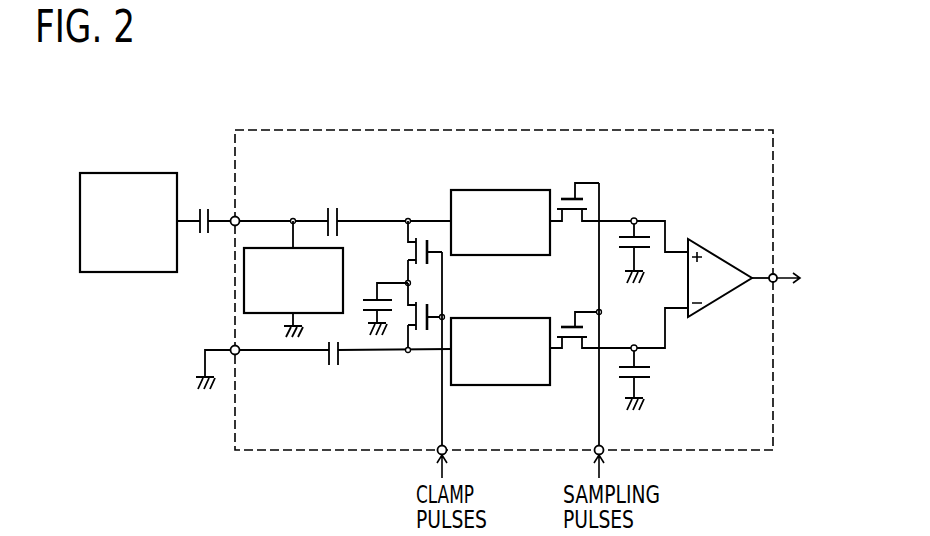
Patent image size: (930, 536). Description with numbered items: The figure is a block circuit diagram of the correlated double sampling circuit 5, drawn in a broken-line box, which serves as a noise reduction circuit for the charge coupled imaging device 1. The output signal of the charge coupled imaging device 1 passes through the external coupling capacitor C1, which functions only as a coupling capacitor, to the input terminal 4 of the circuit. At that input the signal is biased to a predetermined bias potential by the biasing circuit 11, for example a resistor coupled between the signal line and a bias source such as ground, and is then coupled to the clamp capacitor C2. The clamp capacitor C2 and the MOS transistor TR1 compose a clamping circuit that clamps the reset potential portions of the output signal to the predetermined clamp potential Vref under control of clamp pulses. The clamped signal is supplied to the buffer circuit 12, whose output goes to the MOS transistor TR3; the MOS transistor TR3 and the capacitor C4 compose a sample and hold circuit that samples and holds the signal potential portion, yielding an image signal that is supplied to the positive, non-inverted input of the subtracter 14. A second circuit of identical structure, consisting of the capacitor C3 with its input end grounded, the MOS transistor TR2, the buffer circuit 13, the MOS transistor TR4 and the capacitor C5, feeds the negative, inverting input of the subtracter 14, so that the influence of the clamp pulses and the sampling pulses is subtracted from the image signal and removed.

The charge coupled imaging device 1 is at (127, 172).
The input terminal 4 is at (231, 217).
The correlated double sampling circuit 5 is at (422, 130).
The biasing circuit 11 is at (244, 298).
The buffer circuit 12 is at (478, 191).
The buffer circuit 13 is at (477, 319).
The subtracter 14 is at (706, 240).
The coupling capacitor C1 is at (203, 238).
The clamp capacitor C2 is at (332, 208).
The capacitor C3 is at (332, 370).
The capacitor C4 is at (634, 234).
The capacitor C5 is at (649, 377).
The MOS transistor TR1 is at (418, 235).
The MOS transistor TR2 is at (418, 332).
The MOS transistor TR3 is at (592, 188).
The MOS transistor TR4 is at (592, 346).
The clamp potential Vref is at (381, 292).